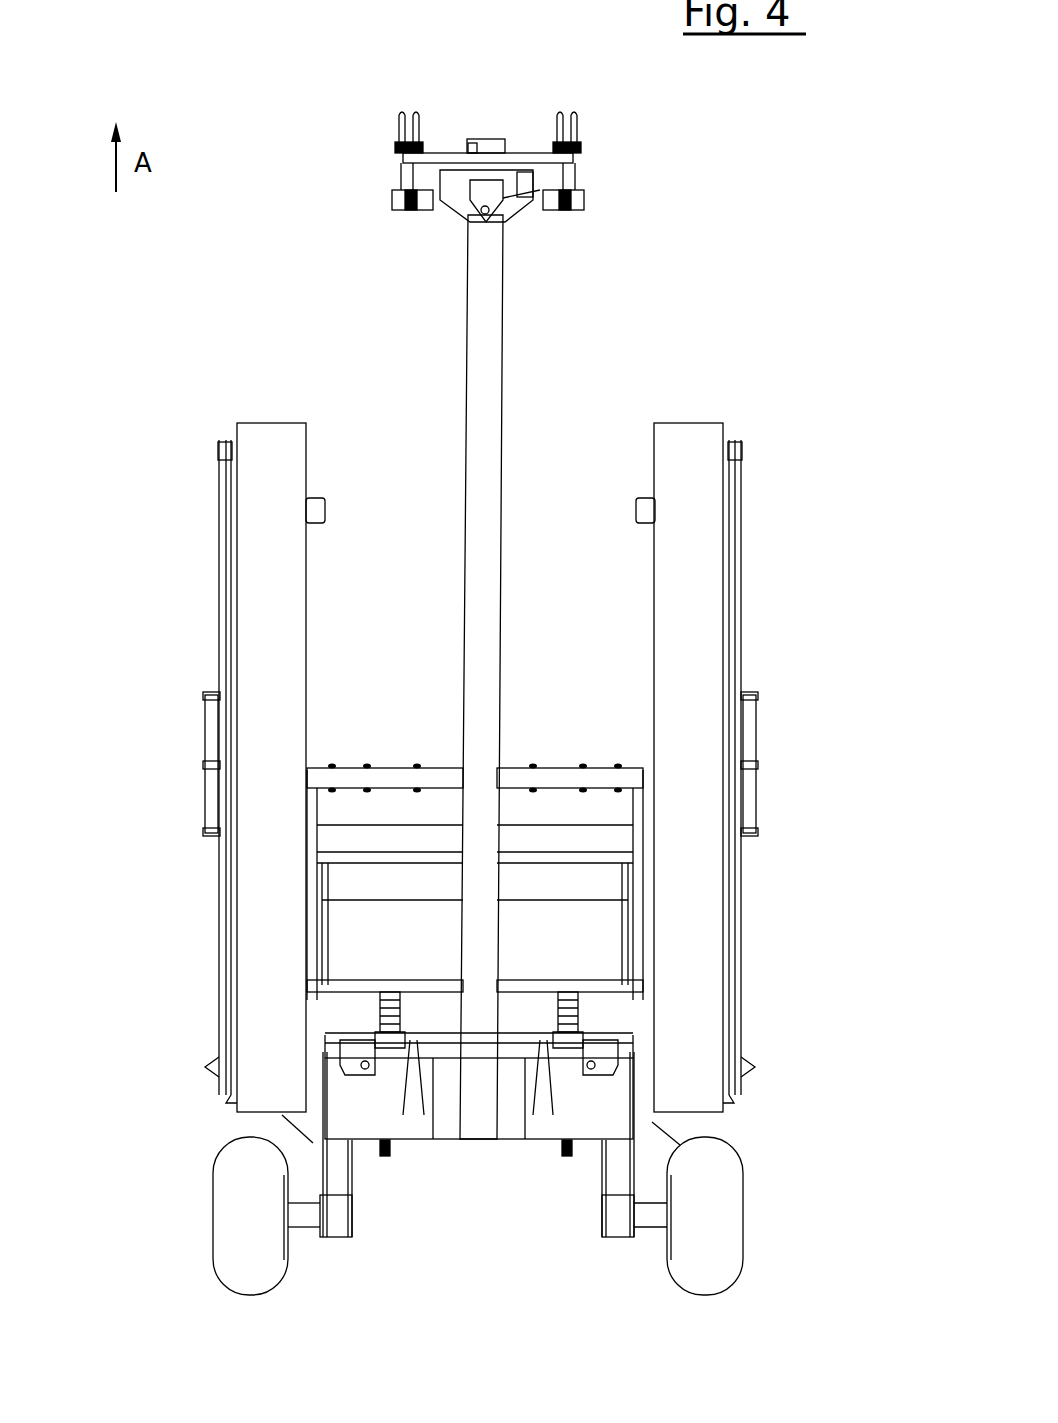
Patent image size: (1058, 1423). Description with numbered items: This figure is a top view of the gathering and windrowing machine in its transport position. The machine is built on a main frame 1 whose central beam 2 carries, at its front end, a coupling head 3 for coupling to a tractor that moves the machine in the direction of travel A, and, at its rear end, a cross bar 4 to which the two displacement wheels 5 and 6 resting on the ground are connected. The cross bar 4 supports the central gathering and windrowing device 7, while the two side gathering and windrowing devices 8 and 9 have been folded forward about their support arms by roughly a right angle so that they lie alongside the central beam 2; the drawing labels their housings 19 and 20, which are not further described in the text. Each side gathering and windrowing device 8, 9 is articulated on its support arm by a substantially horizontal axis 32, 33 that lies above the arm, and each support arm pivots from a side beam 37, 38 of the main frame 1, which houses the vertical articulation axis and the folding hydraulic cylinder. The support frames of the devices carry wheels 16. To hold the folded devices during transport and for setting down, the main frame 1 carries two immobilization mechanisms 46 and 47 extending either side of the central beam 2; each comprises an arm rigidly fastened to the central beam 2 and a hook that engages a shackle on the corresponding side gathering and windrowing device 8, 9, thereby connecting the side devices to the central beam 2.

The main frame 1 is at (483, 1175).
The central beam 2 is at (496, 380).
The coupling head 3 is at (577, 150).
The cross bar 4 is at (545, 1130).
The displacement wheel 5 is at (725, 1272).
The displacement wheel 6 is at (233, 1272).
The central gathering and windrowing device 7 is at (575, 832).
The side gathering and windrowing device 8 is at (758, 743).
The side gathering and windrowing device 9 is at (205, 743).
The wheel 16 is at (330, 510).
The right brush housing 19 is at (700, 612).
The left brush housing 20 is at (265, 612).
The axis 32 is at (752, 735).
The axis 33 is at (210, 742).
The side beam 37 is at (636, 1138).
The side beam 38 is at (320, 1140).
The immobilization mechanism 46 is at (576, 762).
The immobilization mechanism 47 is at (385, 762).